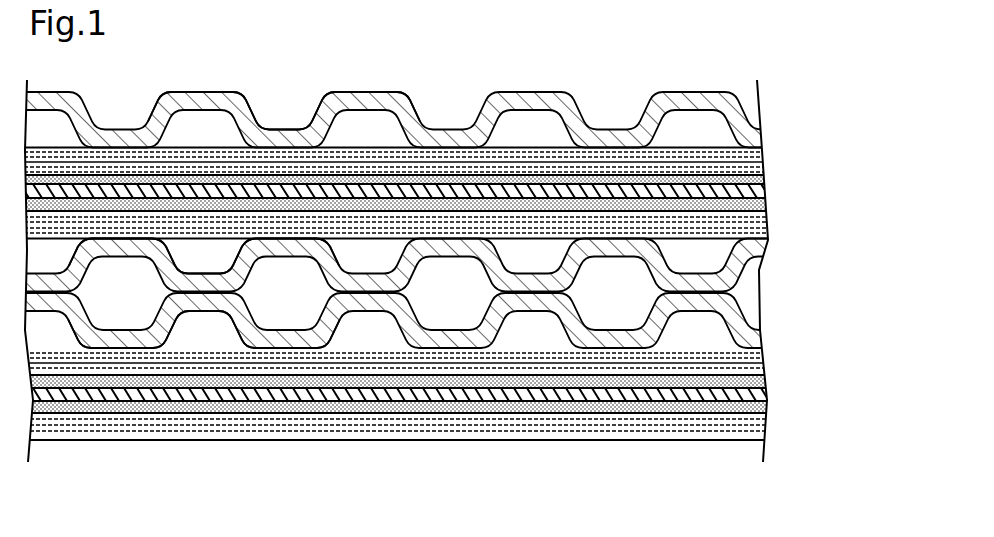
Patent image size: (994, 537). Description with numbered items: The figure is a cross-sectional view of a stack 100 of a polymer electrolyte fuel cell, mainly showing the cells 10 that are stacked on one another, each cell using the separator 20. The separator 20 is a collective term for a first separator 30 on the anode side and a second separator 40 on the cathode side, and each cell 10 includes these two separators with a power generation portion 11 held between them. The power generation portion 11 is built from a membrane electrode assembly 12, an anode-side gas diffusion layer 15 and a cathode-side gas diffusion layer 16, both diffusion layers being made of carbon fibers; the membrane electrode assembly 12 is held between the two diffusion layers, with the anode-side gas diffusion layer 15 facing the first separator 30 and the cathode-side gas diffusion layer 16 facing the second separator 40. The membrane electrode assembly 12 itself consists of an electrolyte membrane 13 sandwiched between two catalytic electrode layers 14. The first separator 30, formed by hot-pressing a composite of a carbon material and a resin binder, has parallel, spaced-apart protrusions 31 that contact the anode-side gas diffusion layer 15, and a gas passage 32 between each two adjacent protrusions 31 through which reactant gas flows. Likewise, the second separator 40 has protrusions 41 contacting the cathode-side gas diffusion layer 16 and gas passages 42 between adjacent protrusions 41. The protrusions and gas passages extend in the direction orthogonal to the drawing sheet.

The stack 100 is at (731, 69).
The cell 10 is at (465, 283).
The power generation portion 11 is at (561, 146).
The membrane electrode assembly 12 is at (833, 152).
The electrolyte membrane 13 is at (770, 192).
The catalytic electrode layer 14 is at (770, 178).
The anode-side gas diffusion layer 15 is at (768, 162).
The cathode-side gas diffusion layer 16 is at (770, 225).
The separator 20 is at (439, 214).
The first separator 30 is at (757, 107).
The protrusion 31 is at (152, 139).
The gas passage 32 is at (208, 120).
The second separator 40 is at (757, 270).
The protrusion 41 is at (166, 249).
The gas passage 42 is at (207, 265).